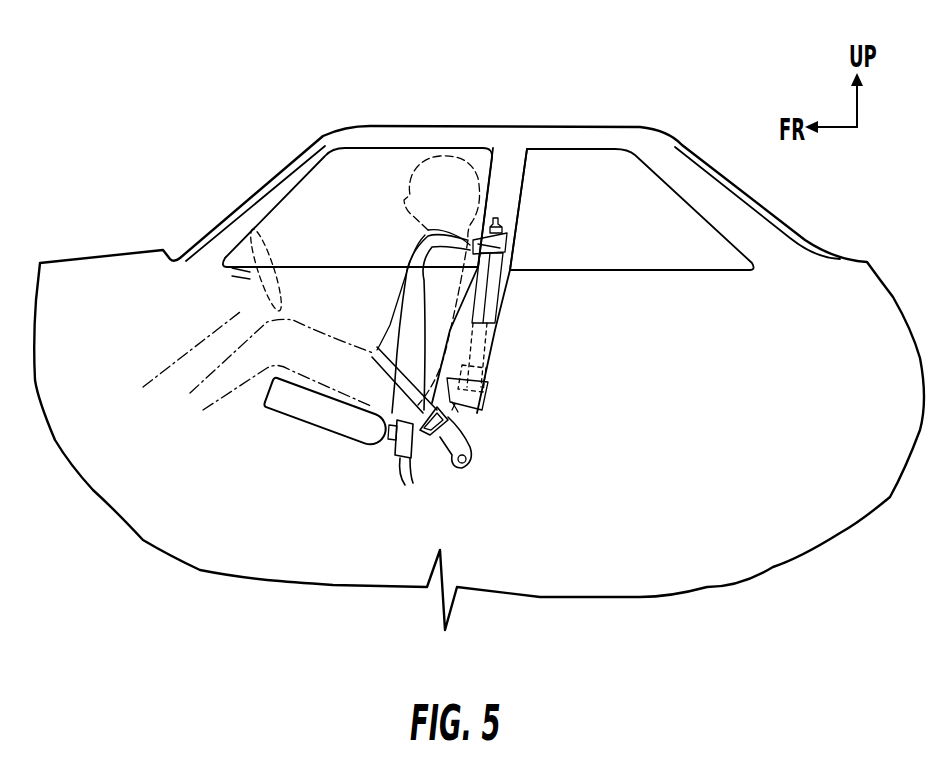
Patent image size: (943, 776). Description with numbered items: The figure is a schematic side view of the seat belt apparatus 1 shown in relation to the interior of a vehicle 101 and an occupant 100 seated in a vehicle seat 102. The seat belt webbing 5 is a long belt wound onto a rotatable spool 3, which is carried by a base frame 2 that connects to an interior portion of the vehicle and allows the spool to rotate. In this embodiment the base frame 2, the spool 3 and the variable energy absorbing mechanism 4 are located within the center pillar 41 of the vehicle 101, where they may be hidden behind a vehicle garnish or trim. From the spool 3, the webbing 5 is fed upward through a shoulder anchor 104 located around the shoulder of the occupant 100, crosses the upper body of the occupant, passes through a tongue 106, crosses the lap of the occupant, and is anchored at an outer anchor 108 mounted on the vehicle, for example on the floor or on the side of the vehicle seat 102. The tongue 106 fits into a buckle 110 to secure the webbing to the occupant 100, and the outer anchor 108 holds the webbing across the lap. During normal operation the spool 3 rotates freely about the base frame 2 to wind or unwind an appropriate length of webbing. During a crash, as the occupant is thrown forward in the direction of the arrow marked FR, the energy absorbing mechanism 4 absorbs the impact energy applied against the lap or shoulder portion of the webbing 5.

The seat belt apparatus 1 is at (497, 400).
The base frame 2 is at (477, 403).
The rotatable spool 3 is at (483, 383).
The variable energy absorbing mechanism 4 is at (457, 398).
The seat belt webbing 5 is at (490, 300).
The center pillar 41 is at (500, 207).
The vehicle occupant 100 is at (430, 185).
The vehicle 101 is at (250, 168).
The vehicle seat 102 is at (318, 415).
The shoulder anchor 104 is at (500, 234).
The tongue 106 is at (417, 480).
The outer anchor 108 is at (393, 447).
The buckle 110 is at (445, 465).